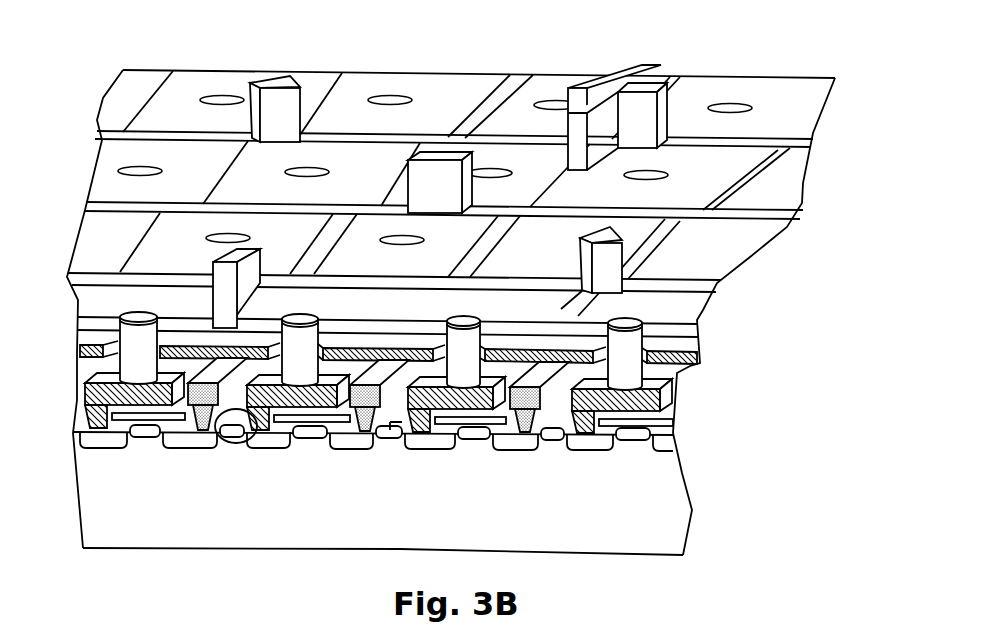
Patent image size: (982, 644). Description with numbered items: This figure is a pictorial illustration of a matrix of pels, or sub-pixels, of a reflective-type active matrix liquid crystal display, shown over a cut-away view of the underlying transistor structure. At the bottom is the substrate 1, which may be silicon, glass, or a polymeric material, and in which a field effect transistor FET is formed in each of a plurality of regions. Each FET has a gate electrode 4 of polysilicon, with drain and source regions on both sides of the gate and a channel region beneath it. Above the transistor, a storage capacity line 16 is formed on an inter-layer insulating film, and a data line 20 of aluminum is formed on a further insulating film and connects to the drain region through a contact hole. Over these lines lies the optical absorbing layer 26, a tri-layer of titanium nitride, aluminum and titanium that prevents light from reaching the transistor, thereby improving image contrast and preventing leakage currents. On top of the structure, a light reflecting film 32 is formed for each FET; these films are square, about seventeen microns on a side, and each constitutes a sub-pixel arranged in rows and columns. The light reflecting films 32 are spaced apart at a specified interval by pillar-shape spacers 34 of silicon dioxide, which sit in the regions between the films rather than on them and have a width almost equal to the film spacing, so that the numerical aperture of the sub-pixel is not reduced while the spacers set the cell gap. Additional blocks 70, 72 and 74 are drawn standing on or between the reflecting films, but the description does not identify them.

The substrate 1 is at (662, 518).
The gate electrode 4 is at (390, 430).
The storage capacity line 16 is at (307, 433).
The data line 20 is at (537, 423).
The optical absorbing layer 26 is at (703, 367).
The light reflecting film 32 is at (193, 131).
The pillar-shape spacer 34 is at (233, 256).
The block element 70 is at (443, 148).
The block element 72 is at (283, 72).
The cross-shaped block element 74 is at (638, 62).
The field effect transistor FET is at (237, 444).